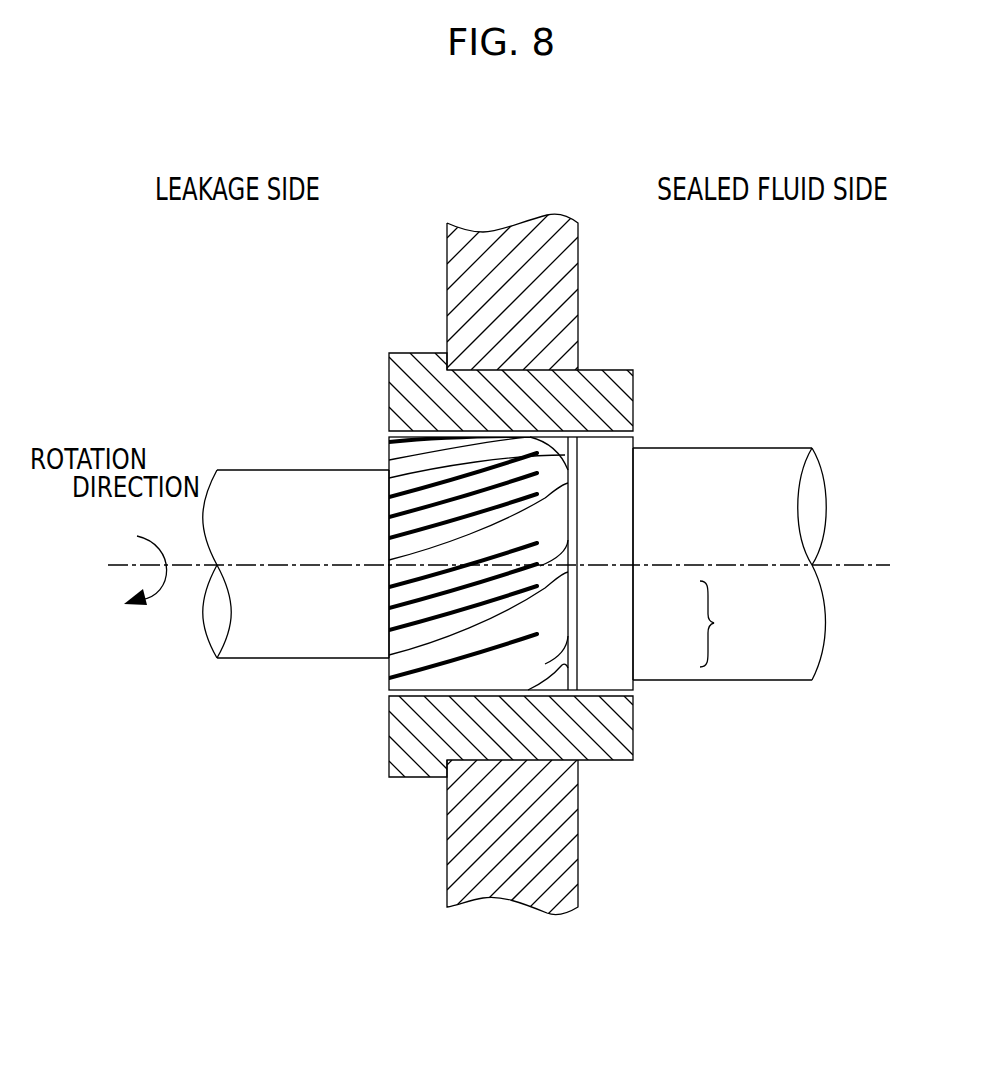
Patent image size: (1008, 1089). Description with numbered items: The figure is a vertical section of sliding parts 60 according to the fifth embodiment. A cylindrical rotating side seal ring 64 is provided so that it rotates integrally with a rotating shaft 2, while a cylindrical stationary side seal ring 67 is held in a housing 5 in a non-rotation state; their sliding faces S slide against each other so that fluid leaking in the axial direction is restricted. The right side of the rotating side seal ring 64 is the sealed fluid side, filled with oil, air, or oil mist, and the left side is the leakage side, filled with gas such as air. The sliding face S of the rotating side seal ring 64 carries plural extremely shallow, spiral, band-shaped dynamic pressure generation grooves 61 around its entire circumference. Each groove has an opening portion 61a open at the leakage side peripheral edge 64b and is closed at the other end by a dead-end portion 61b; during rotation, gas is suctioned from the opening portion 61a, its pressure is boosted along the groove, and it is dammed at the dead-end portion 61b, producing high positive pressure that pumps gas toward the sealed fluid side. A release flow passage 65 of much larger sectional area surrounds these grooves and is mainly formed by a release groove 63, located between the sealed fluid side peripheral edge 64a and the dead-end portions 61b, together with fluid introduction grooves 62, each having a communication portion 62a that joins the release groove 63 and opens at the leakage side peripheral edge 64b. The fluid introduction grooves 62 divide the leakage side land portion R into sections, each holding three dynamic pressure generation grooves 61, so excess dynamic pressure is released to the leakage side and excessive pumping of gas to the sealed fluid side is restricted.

The rotating shaft 2 is at (782, 447).
The housing 5 is at (468, 270).
The sliding face S is at (454, 437).
The leakage side land portion R is at (617, 433).
The sliding parts 60 is at (547, 491).
The dynamic pressure generation groove 61 is at (405, 605).
The opening portion 61a is at (395, 612).
The dead-end portion 61b is at (537, 543).
The fluid introduction groove 62 is at (537, 597).
The communication portion 62a is at (389, 652).
The release groove 63 is at (543, 650).
The rotating side seal ring 64 is at (641, 462).
The sealed fluid side peripheral edge 64a is at (633, 480).
The leakage side peripheral edge 64b is at (389, 490).
The release flow passage 65 is at (714, 623).
The stationary side seal ring 67 is at (600, 382).